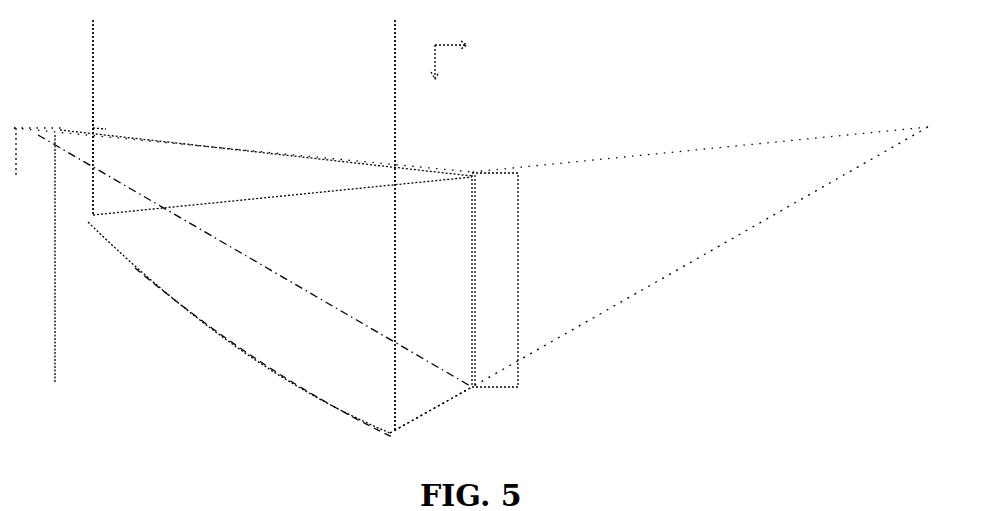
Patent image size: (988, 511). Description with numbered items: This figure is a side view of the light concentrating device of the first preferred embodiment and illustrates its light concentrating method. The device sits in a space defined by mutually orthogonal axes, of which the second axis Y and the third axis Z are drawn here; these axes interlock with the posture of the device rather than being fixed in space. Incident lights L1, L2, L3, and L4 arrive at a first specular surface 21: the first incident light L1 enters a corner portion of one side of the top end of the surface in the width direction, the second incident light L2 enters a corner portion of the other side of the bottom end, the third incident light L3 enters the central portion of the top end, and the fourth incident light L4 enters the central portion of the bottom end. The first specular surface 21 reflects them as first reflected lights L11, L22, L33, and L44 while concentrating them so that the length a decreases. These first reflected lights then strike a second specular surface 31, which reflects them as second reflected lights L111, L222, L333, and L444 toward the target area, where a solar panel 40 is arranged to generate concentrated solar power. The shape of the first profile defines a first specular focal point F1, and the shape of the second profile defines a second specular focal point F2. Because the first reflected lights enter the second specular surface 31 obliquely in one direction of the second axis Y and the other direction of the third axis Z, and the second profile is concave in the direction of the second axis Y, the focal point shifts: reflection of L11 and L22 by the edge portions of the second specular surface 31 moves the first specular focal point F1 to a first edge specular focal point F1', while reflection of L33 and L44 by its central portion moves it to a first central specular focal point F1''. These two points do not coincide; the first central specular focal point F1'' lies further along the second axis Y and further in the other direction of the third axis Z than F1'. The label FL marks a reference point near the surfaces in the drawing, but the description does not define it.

The first specular focal point F1 is at (700, 231).
The first edge specular focal point F1' is at (27, 163).
The first central specular focal point F1'' is at (125, 112).
The second specular focal point F2 is at (55, 304).
The focal length reference point FL is at (62, 128).
The solar panel 40 is at (93, 127).
The first incident light L1 is at (93, 40).
The second incident light L2 is at (395, 121).
The third incident light L3 is at (97, 48).
The fourth incident light L4 is at (395, 55).
The first reflected light of the first incident light L11 is at (297, 174).
The first reflected light of the second incident light L22 is at (430, 413).
The first reflected light of the third incident light L33 is at (140, 234).
The first reflected light of the fourth incident light L44 is at (426, 414).
The second reflected light of the first reflected light L11 L111 is at (235, 155).
The second reflected light of the first reflected light L22 L222 is at (357, 323).
The second reflected light of the first reflected light L33 L333 is at (345, 153).
The second reflected light of the first reflected light L44 L444 is at (327, 256).
The first specular surface 21 is at (253, 356).
The second specular surface 31 is at (470, 237).
The second axis Y is at (457, 48).
The third axis Z is at (435, 75).